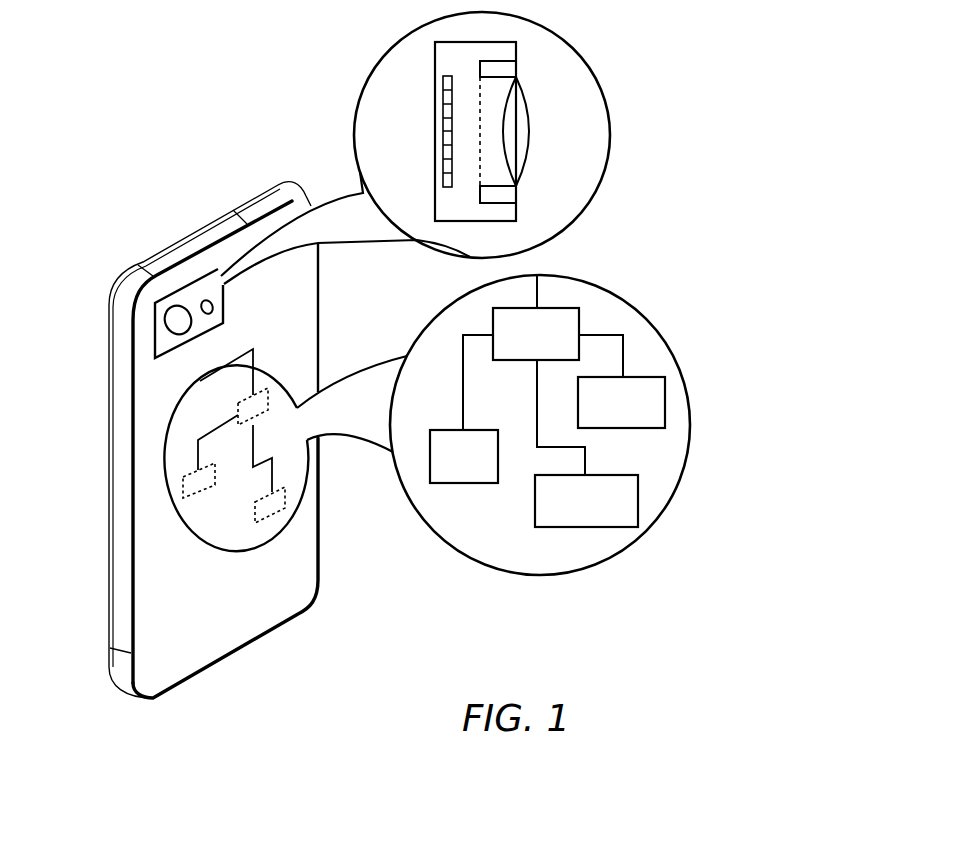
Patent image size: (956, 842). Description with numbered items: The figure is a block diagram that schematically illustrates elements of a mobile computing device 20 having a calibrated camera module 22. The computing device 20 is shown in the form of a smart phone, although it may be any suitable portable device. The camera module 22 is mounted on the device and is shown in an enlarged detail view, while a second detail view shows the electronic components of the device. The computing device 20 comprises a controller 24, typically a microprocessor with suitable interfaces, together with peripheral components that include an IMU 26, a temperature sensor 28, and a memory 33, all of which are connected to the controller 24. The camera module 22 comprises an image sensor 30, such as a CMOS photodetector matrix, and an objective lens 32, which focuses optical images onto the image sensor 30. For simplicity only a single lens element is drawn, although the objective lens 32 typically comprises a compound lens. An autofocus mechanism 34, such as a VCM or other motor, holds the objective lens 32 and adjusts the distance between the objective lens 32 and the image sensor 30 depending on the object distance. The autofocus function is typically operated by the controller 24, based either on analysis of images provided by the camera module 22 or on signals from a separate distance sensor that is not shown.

The mobile computing device 20 is at (122, 503).
The camera module 22 is at (185, 292).
The controller 24 is at (580, 318).
The IMU 26 is at (465, 483).
The temperature sensor 28 is at (638, 497).
The image sensor 30 is at (443, 178).
The objective lens 32 is at (530, 126).
The memory 33 is at (665, 400).
The autofocus mechanism 34 is at (516, 193).